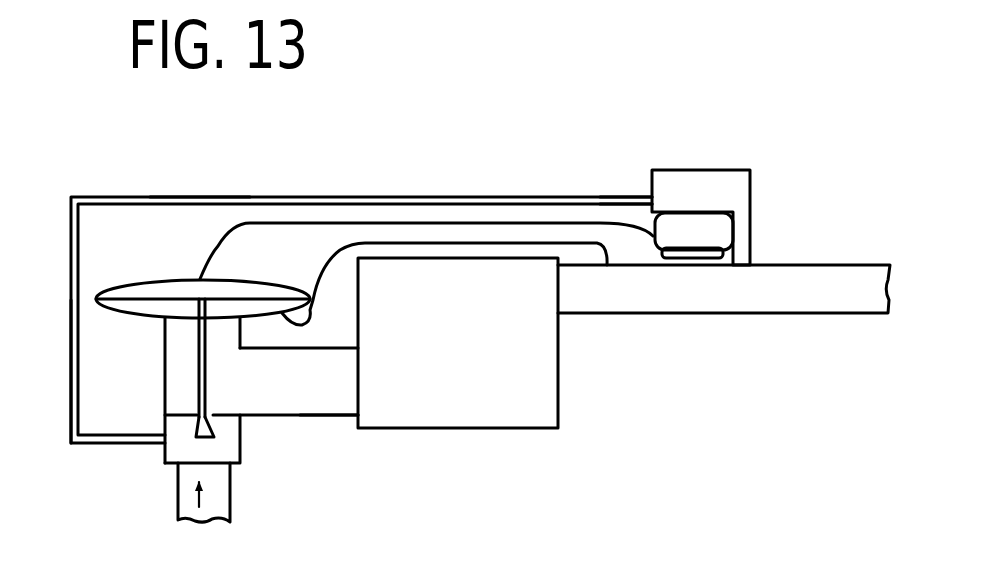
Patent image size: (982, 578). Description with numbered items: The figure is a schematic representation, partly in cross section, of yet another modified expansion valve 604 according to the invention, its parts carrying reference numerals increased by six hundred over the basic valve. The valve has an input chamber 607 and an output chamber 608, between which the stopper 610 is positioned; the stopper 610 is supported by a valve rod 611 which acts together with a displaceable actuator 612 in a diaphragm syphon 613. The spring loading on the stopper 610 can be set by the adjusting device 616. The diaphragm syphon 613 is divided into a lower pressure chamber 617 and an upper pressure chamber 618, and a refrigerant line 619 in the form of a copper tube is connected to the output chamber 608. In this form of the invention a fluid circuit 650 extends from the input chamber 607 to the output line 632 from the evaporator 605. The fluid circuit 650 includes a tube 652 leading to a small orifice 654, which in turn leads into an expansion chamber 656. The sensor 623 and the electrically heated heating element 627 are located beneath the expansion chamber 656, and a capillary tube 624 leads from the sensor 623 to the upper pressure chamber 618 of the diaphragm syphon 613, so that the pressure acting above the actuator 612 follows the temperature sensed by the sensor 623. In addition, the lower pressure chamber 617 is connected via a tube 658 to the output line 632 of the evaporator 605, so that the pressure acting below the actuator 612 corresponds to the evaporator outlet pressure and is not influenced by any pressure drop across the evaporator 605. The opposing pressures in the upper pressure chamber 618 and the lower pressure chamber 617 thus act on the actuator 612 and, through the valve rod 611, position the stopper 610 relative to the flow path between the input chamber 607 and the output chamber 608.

The expansion valve 604 is at (180, 191).
The evaporator 605 is at (467, 413).
The input chamber 607 is at (222, 450).
The output chamber 608 is at (183, 400).
The stopper 610 is at (217, 434).
The valve rod 611 is at (198, 350).
The actuator 612 is at (110, 297).
The diaphragm syphon 613 is at (124, 279).
The adjusting device 616 is at (165, 375).
The lower pressure chamber 617 is at (243, 305).
The upper pressure chamber 618 is at (177, 287).
The refrigerant line 619 is at (333, 417).
The sensor 623 is at (725, 233).
The capillary tube 624 is at (463, 222).
The heating element 627 is at (723, 255).
The output line 632 is at (872, 313).
The fluid circuit 650 is at (70, 377).
The tube 652 is at (122, 198).
The small orifice 654 is at (652, 197).
The expansion chamber 656 is at (703, 172).
The tube 658 is at (547, 243).